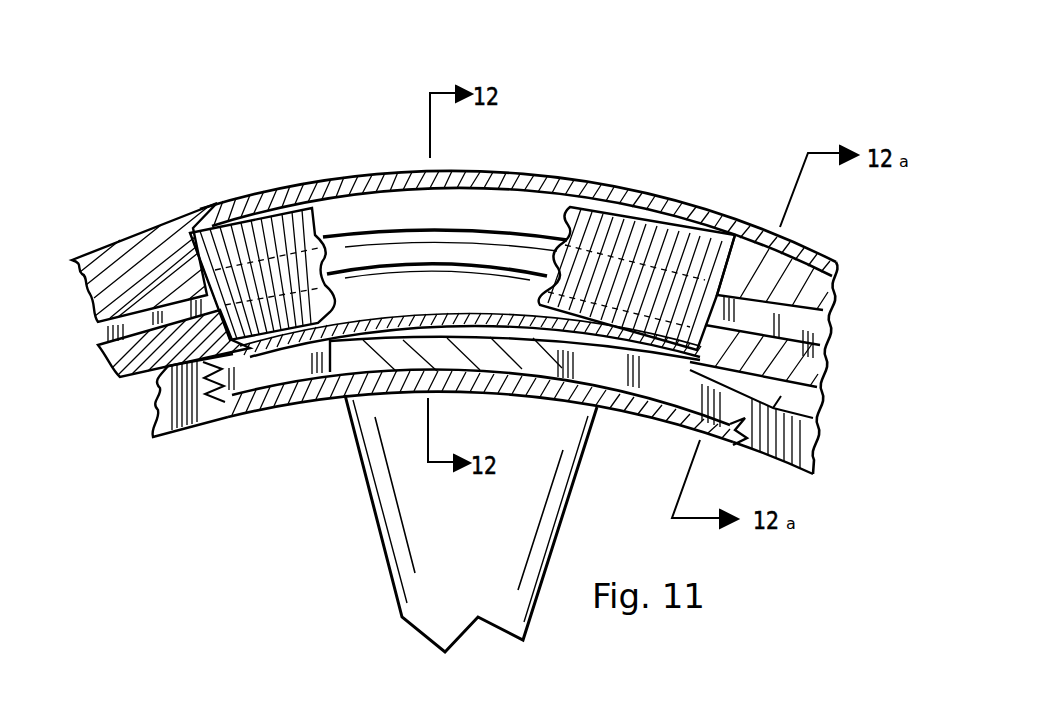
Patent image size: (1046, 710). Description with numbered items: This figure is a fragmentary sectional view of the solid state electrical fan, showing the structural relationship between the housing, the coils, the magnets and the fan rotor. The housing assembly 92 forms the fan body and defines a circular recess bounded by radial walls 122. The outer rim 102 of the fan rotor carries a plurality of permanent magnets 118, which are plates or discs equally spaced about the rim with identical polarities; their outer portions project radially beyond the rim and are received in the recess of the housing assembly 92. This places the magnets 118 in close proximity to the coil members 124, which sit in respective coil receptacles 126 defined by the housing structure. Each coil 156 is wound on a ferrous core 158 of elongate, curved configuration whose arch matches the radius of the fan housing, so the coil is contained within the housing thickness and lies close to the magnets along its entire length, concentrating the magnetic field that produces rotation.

The housing assembly 92 is at (383, 173).
The outer rim 102 is at (627, 407).
The permanent magnets 118 is at (520, 358).
The radial walls 122 is at (167, 413).
The coil members 124 is at (703, 232).
The coil receptacles 126 is at (325, 200).
The coil 156 is at (608, 228).
The ferrous core 158 is at (433, 248).